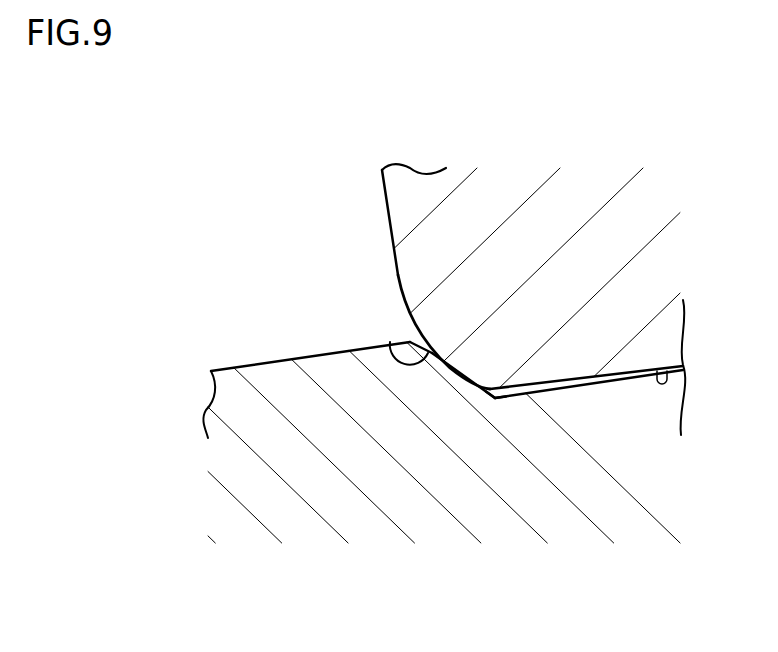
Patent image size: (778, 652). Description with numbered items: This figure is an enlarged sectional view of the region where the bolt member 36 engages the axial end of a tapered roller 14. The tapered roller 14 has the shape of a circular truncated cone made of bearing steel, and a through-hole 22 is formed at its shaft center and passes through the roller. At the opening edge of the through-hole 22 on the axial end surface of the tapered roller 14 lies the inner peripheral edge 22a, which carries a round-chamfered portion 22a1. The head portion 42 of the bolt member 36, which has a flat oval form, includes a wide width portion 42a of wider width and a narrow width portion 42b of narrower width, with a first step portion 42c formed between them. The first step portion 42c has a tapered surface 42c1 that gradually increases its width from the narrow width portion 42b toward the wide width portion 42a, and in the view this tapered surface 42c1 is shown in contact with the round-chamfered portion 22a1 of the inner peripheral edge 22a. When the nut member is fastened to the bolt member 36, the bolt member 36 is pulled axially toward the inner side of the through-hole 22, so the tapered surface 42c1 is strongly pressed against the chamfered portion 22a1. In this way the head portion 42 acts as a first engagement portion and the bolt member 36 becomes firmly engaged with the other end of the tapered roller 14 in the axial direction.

The tapered roller 14 is at (483, 218).
The through-hole 22 is at (503, 390).
The inner peripheral edge 22a is at (448, 370).
The round-chamfered portion 22a1 is at (390, 341).
The bolt member 36 is at (175, 218).
The head portion 42 is at (418, 372).
The wide width portion 42a is at (267, 366).
The narrow width portion 42b is at (583, 384).
The first step portion 42c is at (457, 362).
The tapered surface 42c1 is at (490, 388).